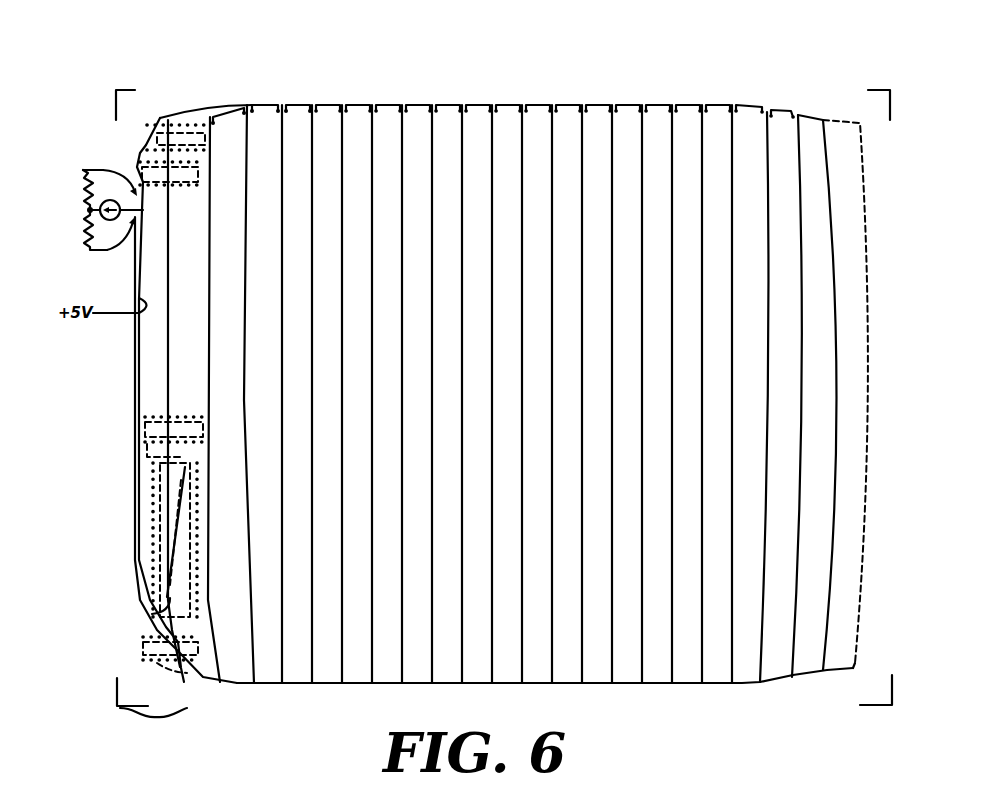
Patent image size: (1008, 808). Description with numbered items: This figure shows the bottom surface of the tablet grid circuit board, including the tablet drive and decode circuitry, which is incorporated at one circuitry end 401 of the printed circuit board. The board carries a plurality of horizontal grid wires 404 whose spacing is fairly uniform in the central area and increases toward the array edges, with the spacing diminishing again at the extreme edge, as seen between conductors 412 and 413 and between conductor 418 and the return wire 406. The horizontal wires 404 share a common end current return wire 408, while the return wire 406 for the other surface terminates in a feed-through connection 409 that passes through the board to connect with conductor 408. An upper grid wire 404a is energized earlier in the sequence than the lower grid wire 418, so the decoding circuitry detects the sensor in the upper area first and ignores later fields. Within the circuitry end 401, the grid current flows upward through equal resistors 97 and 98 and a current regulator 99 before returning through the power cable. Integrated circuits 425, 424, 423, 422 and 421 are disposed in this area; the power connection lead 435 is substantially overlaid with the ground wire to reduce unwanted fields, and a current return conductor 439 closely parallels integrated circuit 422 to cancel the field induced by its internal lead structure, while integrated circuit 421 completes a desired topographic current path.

The upper grid wire 404a is at (311, 113).
The horizontal grid wires 404 is at (432, 120).
The lower grid wire 418 is at (847, 350).
The current return wire 406 is at (873, 415).
The feed-through connection 409 is at (853, 665).
The current return wire 408 is at (742, 687).
The conductor 412 is at (167, 353).
The power connection lead 435 is at (139, 335).
The conductor 413 is at (135, 386).
The integrated circuit 425 is at (147, 127).
The connector 424 is at (140, 173).
The connector 423 is at (142, 428).
The integrated circuit 422 is at (150, 572).
The current return conductor 439 is at (175, 538).
The integrated circuit 421 is at (142, 647).
The resistor 98 is at (88, 186).
The current regulator 99 is at (88, 210).
The resistor 97 is at (88, 232).
The circuitry end 401 is at (153, 727).